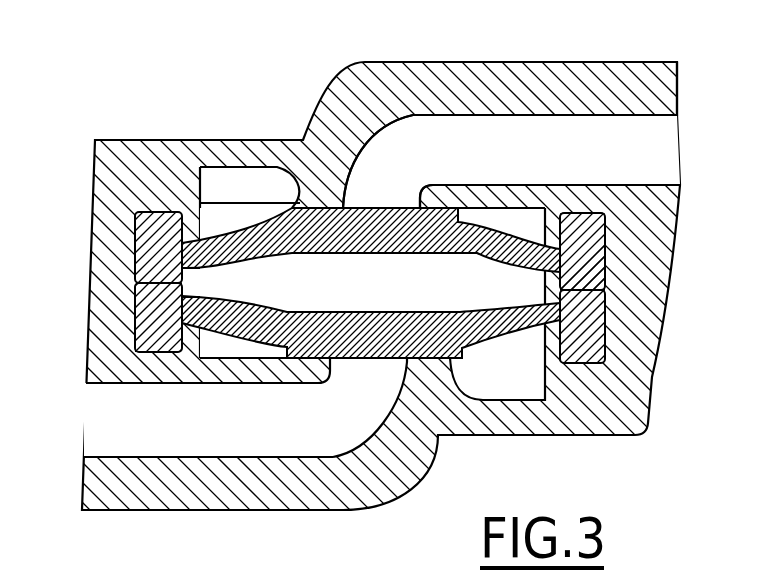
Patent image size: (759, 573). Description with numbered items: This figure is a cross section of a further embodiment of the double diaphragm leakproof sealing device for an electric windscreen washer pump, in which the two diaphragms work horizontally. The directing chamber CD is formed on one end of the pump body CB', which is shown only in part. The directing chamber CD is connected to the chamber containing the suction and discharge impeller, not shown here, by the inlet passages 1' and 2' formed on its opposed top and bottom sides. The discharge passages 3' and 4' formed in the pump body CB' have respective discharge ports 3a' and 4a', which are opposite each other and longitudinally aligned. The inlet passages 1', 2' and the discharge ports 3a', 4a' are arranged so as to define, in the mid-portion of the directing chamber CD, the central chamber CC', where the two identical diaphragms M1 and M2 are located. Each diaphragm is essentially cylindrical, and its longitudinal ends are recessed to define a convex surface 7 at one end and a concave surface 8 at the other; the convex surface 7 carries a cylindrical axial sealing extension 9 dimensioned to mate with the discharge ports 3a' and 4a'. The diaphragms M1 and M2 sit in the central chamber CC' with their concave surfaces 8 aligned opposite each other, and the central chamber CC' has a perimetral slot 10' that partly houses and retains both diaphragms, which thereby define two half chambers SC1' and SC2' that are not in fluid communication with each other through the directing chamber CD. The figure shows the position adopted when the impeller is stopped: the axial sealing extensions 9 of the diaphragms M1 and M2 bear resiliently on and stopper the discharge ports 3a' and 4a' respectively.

The inlet passage 1' is at (379, 286).
The inlet passage 2' is at (501, 445).
The discharge passage 3' is at (267, 462).
The discharge port 3a' is at (358, 462).
The discharge passage 4' is at (511, 105).
The discharge port 4a' is at (378, 105).
The convex surface 7 is at (275, 212).
The concave surface 8 is at (256, 254).
The axial sealing extension 9 is at (398, 208).
The perimetral slot 10' is at (379, 286).
The pump body CB' is at (545, 59).
The central chamber CC' is at (126, 274).
The directing chamber CD is at (212, 223).
The diaphragm M1 is at (603, 348).
The diaphragm M2 is at (613, 258).
The half chamber SC1' is at (514, 349).
The half chamber SC2' is at (240, 214).